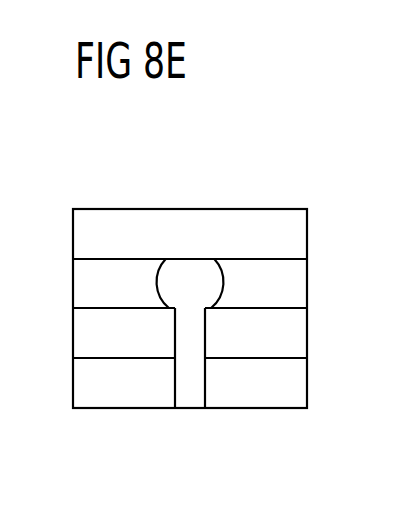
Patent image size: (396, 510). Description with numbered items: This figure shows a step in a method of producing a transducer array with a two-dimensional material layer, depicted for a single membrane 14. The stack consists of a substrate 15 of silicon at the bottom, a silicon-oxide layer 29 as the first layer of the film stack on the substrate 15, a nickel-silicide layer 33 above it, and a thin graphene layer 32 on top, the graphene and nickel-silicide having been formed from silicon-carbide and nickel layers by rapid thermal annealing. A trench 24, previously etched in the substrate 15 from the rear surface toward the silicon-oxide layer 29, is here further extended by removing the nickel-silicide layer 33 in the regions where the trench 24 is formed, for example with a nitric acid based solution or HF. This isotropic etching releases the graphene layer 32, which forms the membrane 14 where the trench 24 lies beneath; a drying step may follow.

The membrane 14 is at (199, 183).
The graphene layer 32 is at (298, 234).
The nickel-silicide layer 33 is at (298, 284).
The silicon-oxide layer 29 is at (298, 333).
The substrate 15 is at (298, 383).
The trench 24 is at (193, 398).